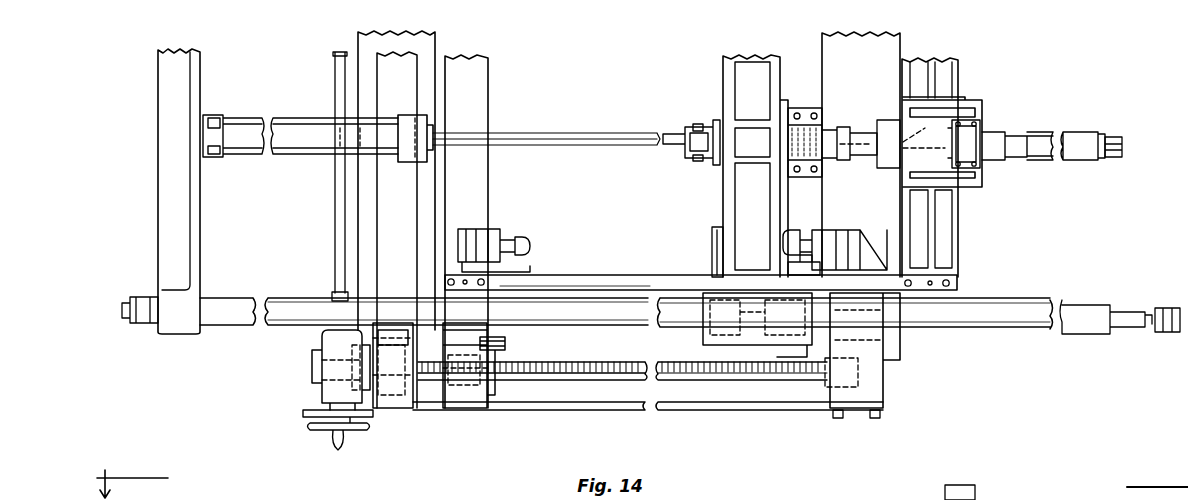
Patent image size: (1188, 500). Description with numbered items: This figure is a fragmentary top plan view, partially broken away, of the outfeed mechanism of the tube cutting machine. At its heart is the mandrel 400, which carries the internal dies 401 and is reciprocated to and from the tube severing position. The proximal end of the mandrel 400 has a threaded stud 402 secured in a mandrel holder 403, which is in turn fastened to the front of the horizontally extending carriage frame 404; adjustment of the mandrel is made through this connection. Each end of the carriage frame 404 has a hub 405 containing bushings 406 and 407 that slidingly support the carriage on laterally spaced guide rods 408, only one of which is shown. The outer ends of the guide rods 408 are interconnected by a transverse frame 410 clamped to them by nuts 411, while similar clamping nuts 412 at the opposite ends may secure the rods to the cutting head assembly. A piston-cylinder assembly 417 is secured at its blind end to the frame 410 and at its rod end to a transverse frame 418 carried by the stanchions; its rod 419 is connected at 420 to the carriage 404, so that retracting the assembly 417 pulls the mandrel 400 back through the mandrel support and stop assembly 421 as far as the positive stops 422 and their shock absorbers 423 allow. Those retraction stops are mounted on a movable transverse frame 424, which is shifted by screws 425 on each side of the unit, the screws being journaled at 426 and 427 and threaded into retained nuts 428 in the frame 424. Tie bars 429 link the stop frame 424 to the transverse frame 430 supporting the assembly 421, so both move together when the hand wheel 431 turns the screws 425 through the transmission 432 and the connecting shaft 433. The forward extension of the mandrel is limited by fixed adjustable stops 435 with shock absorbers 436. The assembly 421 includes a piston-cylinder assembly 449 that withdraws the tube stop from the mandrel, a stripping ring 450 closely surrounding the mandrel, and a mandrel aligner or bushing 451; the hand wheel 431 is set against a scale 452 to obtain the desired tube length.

The mandrel 400 is at (1080, 132).
The internal dies 401 is at (1103, 160).
The threaded stud 402 is at (830, 128).
The mandrel holder 403 is at (806, 108).
The carriage frame 404 is at (740, 185).
The hub 405 is at (718, 343).
The bushing 406 is at (725, 300).
The bushing 407 is at (790, 383).
The guide rods 408 is at (1015, 335).
The frame 410 is at (158, 185).
The nuts 411 is at (146, 325).
The clamping nuts 412 is at (1164, 336).
The piston-cylinder assembly 417 is at (308, 157).
The transverse frame 418 is at (377, 213).
The rod 419 is at (590, 142).
The connection 420 is at (695, 125).
The mandrel support and stop assembly 421 is at (993, 90).
The positive stops 422 is at (528, 273).
The shock absorbers 423 is at (500, 236).
The movable transverse frame 424 is at (490, 170).
The screws 425 is at (578, 380).
The journal 426 is at (410, 412).
The journal 427 is at (843, 390).
The retained nuts 428 is at (470, 410).
The tie bars 429 is at (618, 274).
The transverse frame 430 is at (945, 242).
The hand wheel 431 is at (360, 432).
The transmission 432 is at (330, 390).
The connecting shaft 433 is at (338, 250).
The adjustable stops 435 is at (795, 273).
The shock absorbers 436 is at (828, 232).
The piston-cylinder assembly 449 is at (978, 155).
The stripping ring 450 is at (905, 170).
The mandrel aligner 451 is at (883, 120).
The scale 452 is at (690, 412).